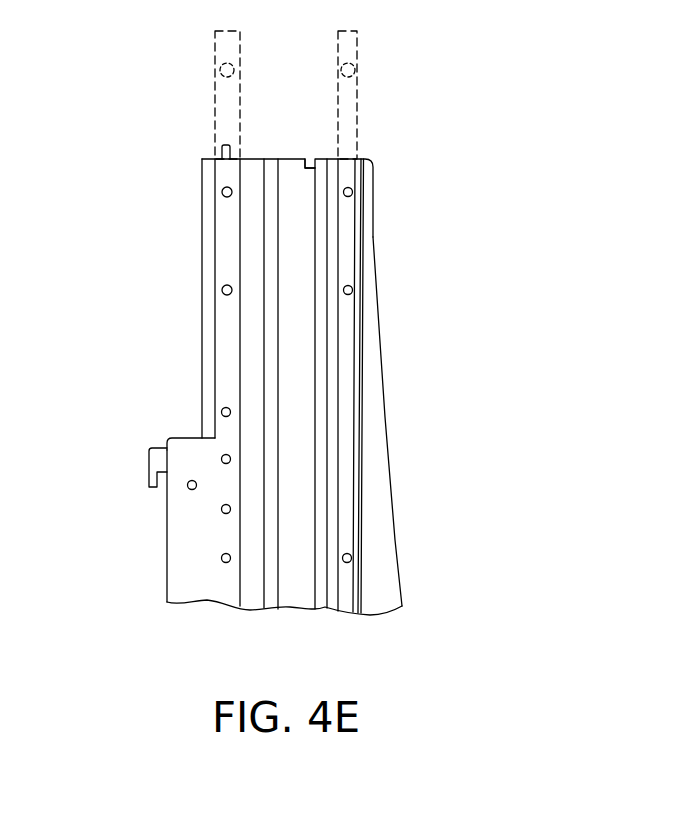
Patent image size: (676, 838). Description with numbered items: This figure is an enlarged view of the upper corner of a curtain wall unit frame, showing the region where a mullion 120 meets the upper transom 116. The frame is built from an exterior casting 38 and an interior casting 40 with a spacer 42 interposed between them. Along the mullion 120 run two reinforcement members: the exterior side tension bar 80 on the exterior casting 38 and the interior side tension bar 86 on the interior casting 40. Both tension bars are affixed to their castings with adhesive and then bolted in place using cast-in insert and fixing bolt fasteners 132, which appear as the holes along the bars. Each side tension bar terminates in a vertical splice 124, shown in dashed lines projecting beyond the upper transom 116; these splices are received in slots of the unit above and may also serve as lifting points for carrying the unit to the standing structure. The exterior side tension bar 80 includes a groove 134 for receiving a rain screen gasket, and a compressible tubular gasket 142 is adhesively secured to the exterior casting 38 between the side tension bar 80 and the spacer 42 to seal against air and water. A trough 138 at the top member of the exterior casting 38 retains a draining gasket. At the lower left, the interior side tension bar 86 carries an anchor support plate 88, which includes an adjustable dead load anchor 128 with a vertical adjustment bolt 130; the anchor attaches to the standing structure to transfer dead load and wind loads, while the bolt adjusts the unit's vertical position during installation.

The vertical splice 124 is at (218, 64).
The trough 138 is at (308, 158).
The upper transom 116 is at (292, 157).
The interior casting 40 is at (200, 403).
The interior side tension bar 86 is at (220, 323).
The spacer 42 is at (266, 353).
The compressible tubular gasket 142 is at (325, 485).
The exterior side tension bar 80 is at (348, 258).
The groove 134 is at (360, 233).
The exterior casting 38 is at (391, 417).
The mullion 120 is at (298, 545).
The cast-in insert and fixing bolt fasteners 132 is at (222, 192).
The vertical adjustment bolt 130 is at (163, 443).
The adjustable dead load anchor 128 is at (150, 463).
The anchor support plate 88 is at (182, 517).